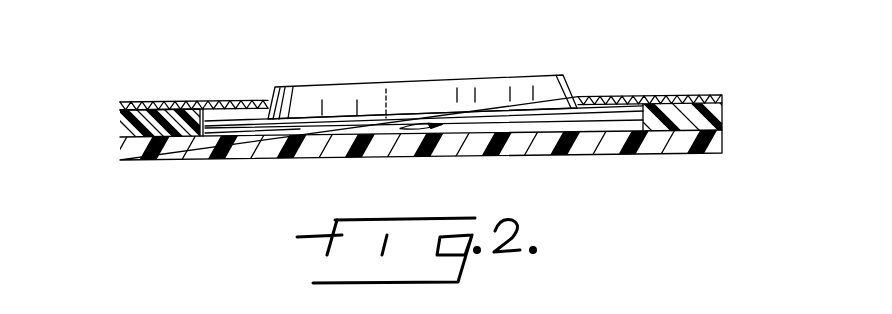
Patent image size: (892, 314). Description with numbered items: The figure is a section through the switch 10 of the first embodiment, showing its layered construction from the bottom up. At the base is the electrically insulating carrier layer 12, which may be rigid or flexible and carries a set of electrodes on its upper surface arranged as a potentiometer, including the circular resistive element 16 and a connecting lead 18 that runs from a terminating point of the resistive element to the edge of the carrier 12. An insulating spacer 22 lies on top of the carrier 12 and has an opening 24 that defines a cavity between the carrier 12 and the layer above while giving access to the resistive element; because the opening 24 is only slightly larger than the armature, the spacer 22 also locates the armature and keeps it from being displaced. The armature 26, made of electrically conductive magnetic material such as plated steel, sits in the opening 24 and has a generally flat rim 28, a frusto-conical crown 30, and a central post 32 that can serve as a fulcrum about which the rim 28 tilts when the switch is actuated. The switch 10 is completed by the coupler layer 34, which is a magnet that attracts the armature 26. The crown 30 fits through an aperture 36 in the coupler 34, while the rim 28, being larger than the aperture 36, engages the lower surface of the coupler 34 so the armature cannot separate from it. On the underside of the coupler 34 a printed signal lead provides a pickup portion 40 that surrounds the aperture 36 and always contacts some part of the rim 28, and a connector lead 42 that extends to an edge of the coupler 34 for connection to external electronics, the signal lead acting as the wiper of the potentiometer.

The switch 10 is at (731, 66).
The carrier layer 12 is at (118, 153).
The circular resistive element 16 is at (248, 127).
The connecting lead 18 is at (722, 123).
The spacer 22 is at (118, 130).
The opening 24 is at (207, 102).
The armature 26 is at (521, 74).
The rim 28 is at (606, 108).
The frusto-conical crown 30 is at (340, 92).
The post 32 is at (434, 128).
The coupler layer 34 is at (133, 102).
The aperture 36 is at (578, 97).
The pickup portion 40 is at (232, 118).
The connector lead 42 is at (722, 100).